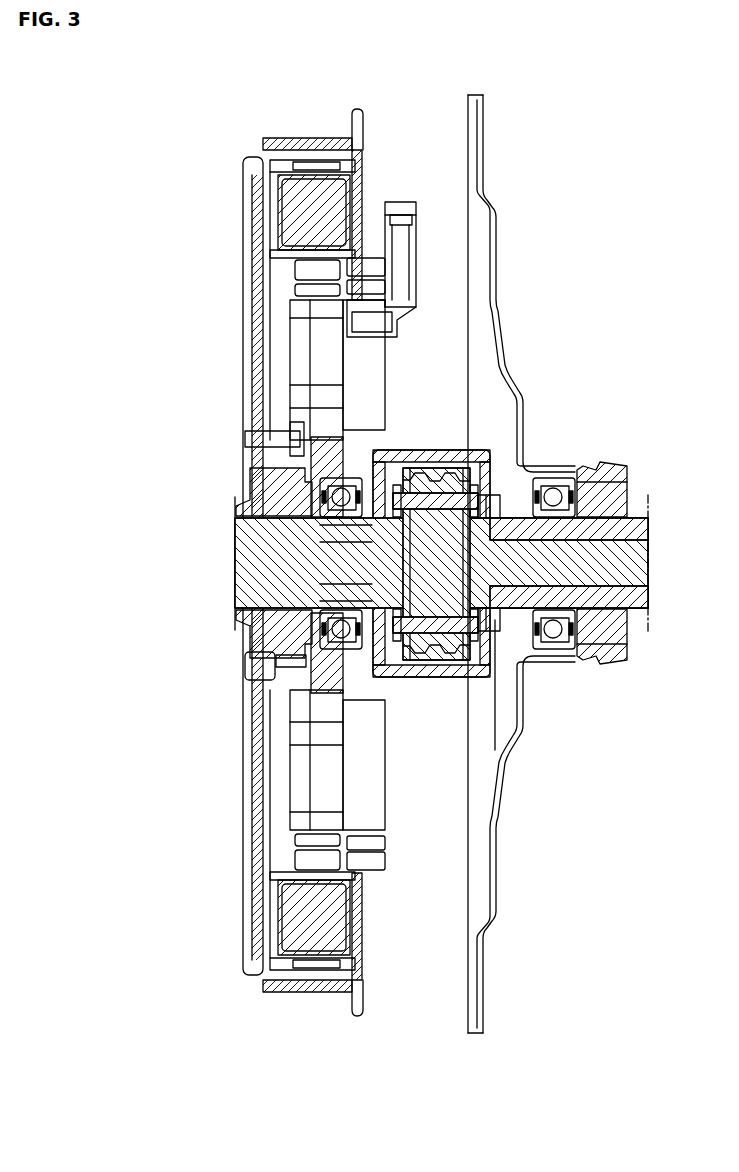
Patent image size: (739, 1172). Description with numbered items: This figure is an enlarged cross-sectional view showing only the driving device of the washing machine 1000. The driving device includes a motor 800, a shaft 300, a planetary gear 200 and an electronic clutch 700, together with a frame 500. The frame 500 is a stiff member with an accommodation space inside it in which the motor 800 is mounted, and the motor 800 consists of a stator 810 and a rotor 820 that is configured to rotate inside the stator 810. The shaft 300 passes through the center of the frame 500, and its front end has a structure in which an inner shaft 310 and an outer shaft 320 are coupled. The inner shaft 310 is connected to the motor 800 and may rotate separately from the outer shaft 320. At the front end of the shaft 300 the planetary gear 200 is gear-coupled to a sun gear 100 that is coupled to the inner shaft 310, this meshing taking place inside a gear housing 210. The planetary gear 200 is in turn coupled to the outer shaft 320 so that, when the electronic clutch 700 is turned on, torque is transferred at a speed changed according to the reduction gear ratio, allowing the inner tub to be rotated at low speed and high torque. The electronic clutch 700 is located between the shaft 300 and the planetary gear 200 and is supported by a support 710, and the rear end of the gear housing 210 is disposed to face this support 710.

The washing machine 1000 is at (156, 97).
The sun gear 100 is at (500, 618).
The planetary gear 200 is at (442, 572).
The gear housing 210 is at (432, 672).
The shaft 300 is at (558, 564).
The inner shaft 310 is at (624, 556).
The outer shaft 320 is at (640, 426).
The frame 500 is at (250, 848).
The electronic clutch 700 is at (318, 524).
The support 710 is at (295, 458).
The motor 800 is at (242, 565).
The stator 810 is at (312, 212).
The rotor 820 is at (322, 314).